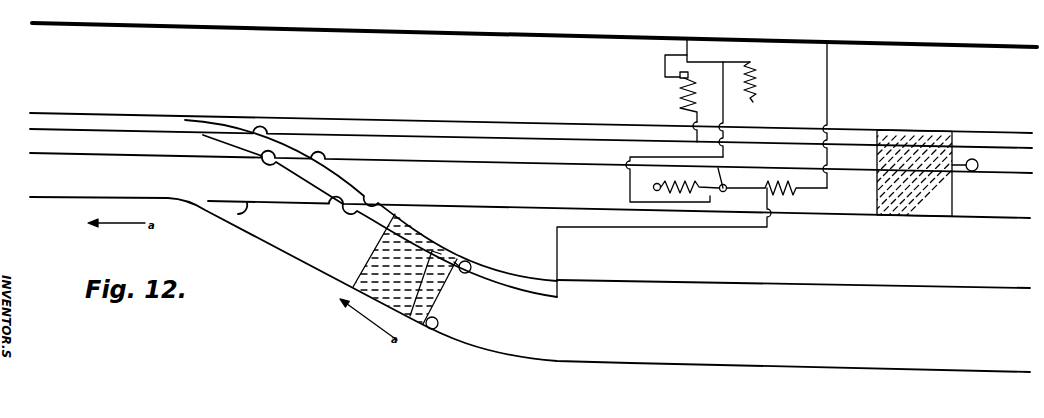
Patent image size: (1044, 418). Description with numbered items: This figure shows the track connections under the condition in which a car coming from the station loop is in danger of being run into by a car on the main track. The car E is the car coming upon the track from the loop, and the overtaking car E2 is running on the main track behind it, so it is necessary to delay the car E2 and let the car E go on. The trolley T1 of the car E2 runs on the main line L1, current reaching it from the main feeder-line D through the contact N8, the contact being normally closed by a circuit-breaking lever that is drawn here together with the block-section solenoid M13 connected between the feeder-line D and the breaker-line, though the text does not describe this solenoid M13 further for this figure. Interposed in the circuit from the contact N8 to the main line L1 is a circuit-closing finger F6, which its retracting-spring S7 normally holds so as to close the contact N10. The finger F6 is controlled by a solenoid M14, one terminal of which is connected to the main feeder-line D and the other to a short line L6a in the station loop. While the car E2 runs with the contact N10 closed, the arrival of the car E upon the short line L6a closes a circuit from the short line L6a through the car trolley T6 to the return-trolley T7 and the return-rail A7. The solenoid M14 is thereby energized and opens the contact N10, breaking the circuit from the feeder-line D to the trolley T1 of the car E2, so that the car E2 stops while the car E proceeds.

The main feeder-line D is at (534, 35).
The contact N8 is at (721, 98).
The electromagnet coil M13 is at (662, 98).
The retracting-spring S7 is at (674, 179).
The circuit-closing finger F6 is at (730, 180).
The contact N10 is at (743, 198).
The solenoid M14 is at (796, 124).
The car E is at (405, 269).
The trolley T6 is at (470, 256).
The return-trolley T7 is at (438, 323).
The short line L6a is at (782, 299).
The return-rail A7 is at (530, 293).
The overtaking car E2 is at (888, 187).
The trolley T1 is at (976, 164).
The main line L1 is at (992, 182).